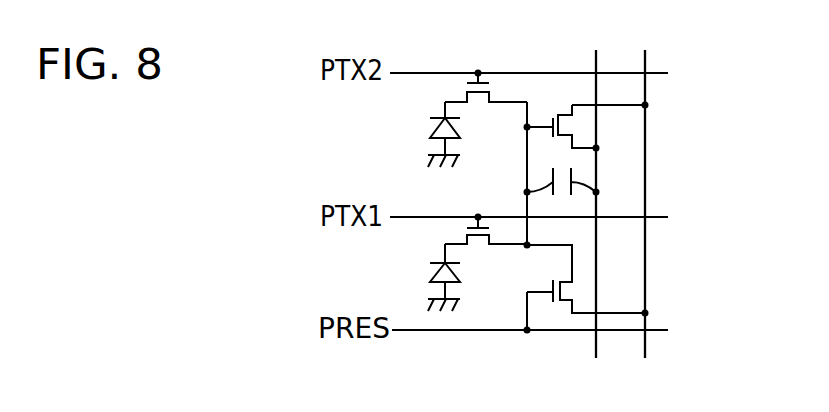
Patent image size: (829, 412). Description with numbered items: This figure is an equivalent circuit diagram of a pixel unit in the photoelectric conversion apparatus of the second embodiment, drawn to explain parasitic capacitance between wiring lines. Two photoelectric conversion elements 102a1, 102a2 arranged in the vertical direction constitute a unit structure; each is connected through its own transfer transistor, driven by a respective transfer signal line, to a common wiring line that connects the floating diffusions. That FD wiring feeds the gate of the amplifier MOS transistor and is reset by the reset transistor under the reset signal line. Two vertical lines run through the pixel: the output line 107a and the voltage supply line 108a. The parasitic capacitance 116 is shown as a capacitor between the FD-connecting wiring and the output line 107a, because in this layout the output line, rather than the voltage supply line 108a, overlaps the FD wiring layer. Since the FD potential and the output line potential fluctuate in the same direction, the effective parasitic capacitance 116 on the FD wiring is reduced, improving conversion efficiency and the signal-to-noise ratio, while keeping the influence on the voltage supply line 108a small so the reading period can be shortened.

The output line 107a is at (596, 52).
The voltage supply line 108a is at (645, 52).
The photoelectric conversion element 102a1 is at (440, 121).
The photoelectric conversion element 102a2 is at (440, 264).
The parasitic capacitance 116 is at (573, 179).